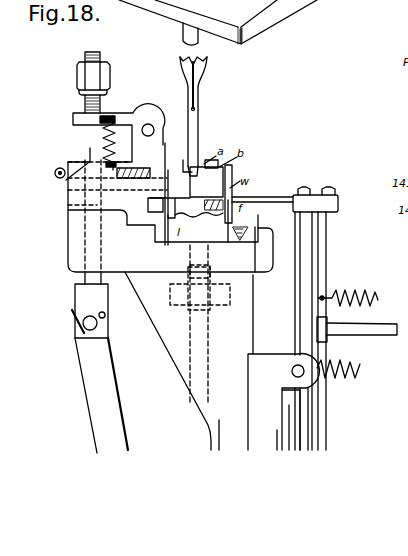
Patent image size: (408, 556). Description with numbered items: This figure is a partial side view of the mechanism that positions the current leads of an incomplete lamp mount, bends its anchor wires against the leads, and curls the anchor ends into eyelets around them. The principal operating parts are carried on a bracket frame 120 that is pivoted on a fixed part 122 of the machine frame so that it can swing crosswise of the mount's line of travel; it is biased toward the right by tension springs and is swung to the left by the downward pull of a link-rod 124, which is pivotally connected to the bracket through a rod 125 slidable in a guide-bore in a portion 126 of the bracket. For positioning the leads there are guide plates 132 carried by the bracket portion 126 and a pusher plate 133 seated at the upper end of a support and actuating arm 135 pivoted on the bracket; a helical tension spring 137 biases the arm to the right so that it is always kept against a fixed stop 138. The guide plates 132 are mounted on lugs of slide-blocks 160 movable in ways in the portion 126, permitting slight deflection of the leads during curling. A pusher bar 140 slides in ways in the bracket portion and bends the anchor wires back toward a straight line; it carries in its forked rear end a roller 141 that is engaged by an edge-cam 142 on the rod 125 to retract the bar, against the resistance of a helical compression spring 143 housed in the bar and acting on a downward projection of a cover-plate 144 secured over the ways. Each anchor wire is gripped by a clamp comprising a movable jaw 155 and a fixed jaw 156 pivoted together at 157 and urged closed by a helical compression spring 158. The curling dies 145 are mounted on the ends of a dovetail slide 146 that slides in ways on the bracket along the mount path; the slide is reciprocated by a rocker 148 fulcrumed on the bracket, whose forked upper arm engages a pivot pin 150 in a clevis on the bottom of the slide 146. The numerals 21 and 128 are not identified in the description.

The tool blade 21 is at (207, 75).
The fixed part 122 is at (218, 22).
The rod 125 is at (85, 102).
The link-rod 124 is at (93, 392).
The movable jaw 155 is at (123, 113).
The pivot 157 is at (150, 124).
The pusher bar 140 is at (186, 168).
The helical compression spring 158 is at (100, 137).
The edge-cam 142 is at (90, 150).
The roller 141 is at (55, 173).
The cover-plate 144 is at (75, 178).
The helical compression spring 143 is at (133, 189).
The slide-block 160 is at (157, 214).
The die 145 is at (231, 175).
The fixed jaw 156 is at (236, 180).
The guide plate 132 is at (241, 195).
The pusher plate 133 is at (281, 196).
The dovetail slide 146 is at (240, 225).
The support and actuating arm 135 is at (328, 243).
The helical tension spring 137 is at (365, 280).
The fixed stop 138 is at (383, 331).
The spring 128 is at (347, 381).
The portion of bracket 126 is at (159, 327).
The bracket frame 120 is at (272, 429).
The rocker 148 is at (195, 407).
The pivot pin 150 is at (170, 300).